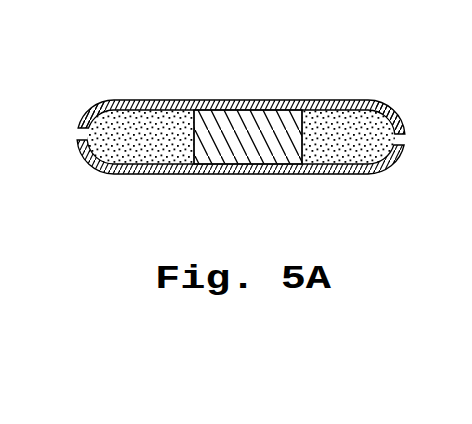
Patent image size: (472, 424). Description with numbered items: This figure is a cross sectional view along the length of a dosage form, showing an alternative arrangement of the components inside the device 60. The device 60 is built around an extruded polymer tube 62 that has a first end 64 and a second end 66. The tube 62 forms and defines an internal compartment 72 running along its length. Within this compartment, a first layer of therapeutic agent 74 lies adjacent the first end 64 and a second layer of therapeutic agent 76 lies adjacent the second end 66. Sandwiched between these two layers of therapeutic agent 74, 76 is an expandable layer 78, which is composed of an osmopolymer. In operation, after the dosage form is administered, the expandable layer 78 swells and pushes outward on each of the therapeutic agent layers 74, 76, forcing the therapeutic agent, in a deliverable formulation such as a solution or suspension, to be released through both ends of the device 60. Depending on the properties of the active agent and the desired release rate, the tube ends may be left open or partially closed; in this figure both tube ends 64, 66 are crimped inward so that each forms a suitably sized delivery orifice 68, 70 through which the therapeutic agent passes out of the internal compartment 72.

The device 60 is at (233, 116).
The extruded polymer tube 62 is at (153, 90).
The first end 64 is at (81, 116).
The second end 66 is at (401, 116).
The delivery orifice 68 is at (77, 138).
The delivery orifice 70 is at (407, 142).
The internal compartment 72 is at (234, 121).
The first layer of therapeutic agent 74 is at (158, 150).
The second layer of therapeutic agent 76 is at (330, 152).
The expandable layer 78 is at (228, 150).